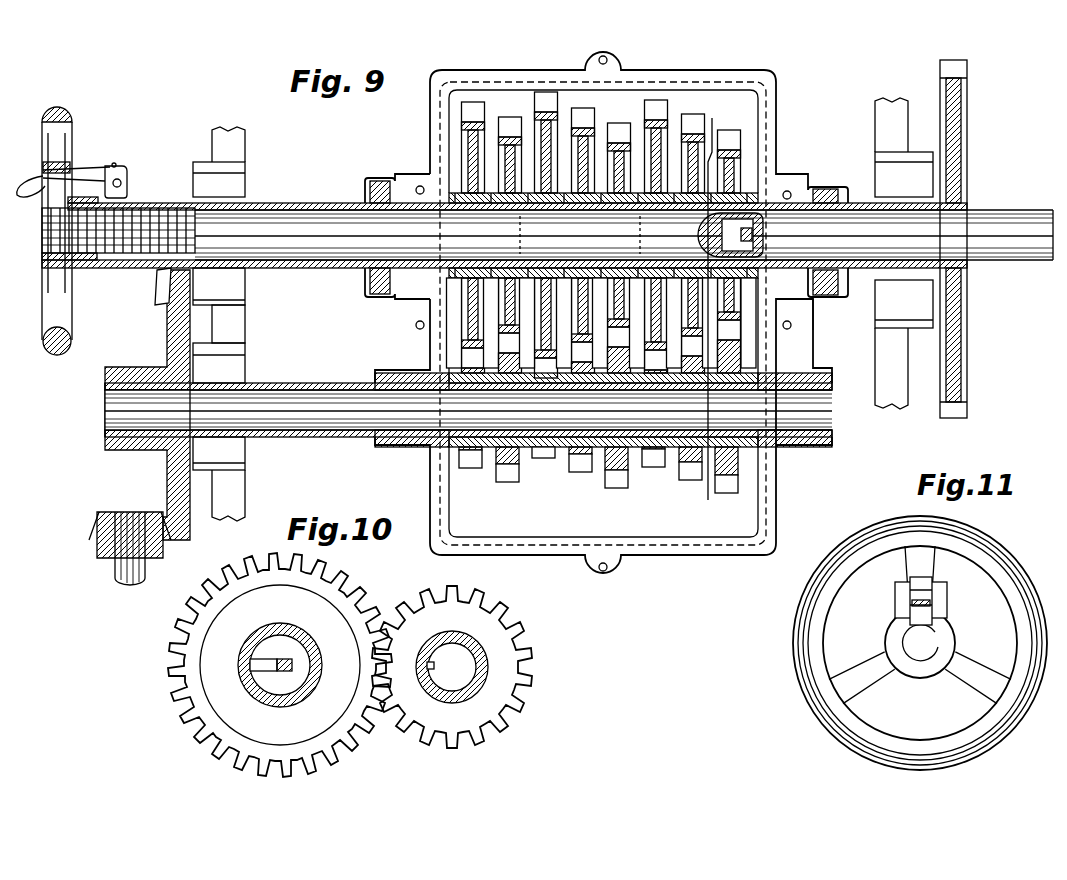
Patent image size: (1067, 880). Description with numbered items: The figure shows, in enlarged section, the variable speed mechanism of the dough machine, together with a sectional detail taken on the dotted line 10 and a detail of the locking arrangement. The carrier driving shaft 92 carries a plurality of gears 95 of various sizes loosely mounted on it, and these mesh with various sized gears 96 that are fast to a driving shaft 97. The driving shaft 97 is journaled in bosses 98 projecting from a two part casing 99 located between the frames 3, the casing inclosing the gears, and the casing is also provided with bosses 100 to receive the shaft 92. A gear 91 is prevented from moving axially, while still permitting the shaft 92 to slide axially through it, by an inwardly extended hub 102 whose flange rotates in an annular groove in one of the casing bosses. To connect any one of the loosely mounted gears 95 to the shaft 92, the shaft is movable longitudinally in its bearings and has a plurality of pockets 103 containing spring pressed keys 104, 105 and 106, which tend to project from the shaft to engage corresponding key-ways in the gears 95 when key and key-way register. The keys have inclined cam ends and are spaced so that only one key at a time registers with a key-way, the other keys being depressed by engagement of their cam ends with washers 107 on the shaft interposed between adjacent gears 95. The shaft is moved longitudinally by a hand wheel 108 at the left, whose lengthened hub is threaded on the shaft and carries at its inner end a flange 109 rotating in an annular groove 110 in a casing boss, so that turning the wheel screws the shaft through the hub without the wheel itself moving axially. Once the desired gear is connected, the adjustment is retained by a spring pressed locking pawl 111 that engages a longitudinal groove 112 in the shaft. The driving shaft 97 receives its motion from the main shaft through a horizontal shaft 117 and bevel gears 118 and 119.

In FIG. 9, the frame 3 is at (228, 140).
In FIG. 9, the section line 10— 10 is at (716, 314).
In FIG. 9, the gear 91 is at (962, 84).
In FIG. 9, the carrier driving shaft 92 is at (295, 212).
In FIG. 10, the carrier driving shaft 92 is at (310, 642).
In FIG. 9, the gears 95 is at (548, 95).
In FIG. 10, the gears 95 is at (352, 598).
In FIG. 9, the gears 96 is at (545, 452).
In FIG. 10, the gears 96 is at (527, 655).
In FIG. 9, the driving shaft 97 is at (322, 390).
In FIG. 10, the driving shaft 97 is at (448, 650).
In FIG. 9, the bosses 98 is at (374, 438).
In FIG. 9, the two part casing 99 is at (776, 84).
In FIG. 9, the bosses 100 is at (410, 203).
In FIG. 9, the inwardly extended hub 102 is at (850, 298).
In FIG. 9, the pockets 103 is at (618, 248).
In FIG. 9, the spring pressed key 104 is at (520, 228).
In FIG. 9, the spring pressed key 105 is at (630, 232).
In FIG. 9, the spring pressed key 106 is at (715, 230).
In FIG. 10, the spring pressed key 106 is at (268, 658).
In FIG. 9, the washers 107 is at (452, 272).
In FIG. 9, the hand wheel 108 is at (72, 120).
In FIG. 9, the flange 109 is at (368, 285).
In FIG. 9, the annular groove 110 is at (370, 182).
In FIG. 9, the spring pressed locking pawl 111 is at (40, 178).
In FIG. 11, the spring pressed locking pawl 111 is at (922, 595).
In FIG. 11, the longitudinal groove 112 is at (910, 617).
In FIG. 9, the horizontal shaft 117 is at (115, 572).
In FIG. 9, the bevel gear 118 is at (97, 522).
In FIG. 9, the bevel gear 119 is at (163, 302).